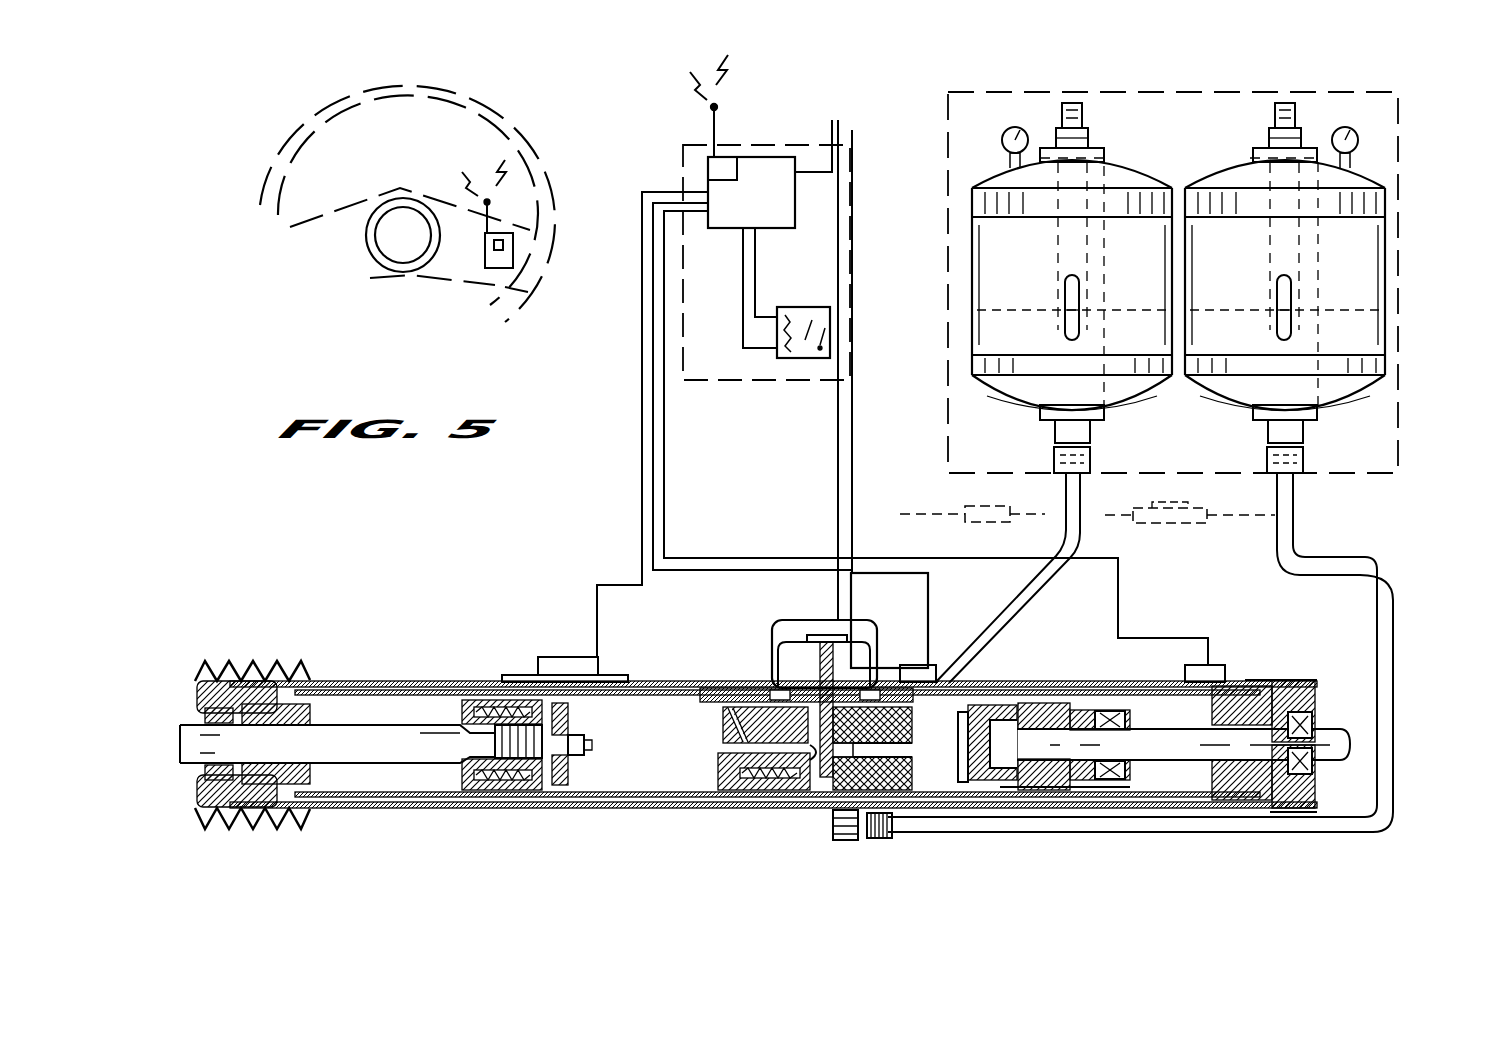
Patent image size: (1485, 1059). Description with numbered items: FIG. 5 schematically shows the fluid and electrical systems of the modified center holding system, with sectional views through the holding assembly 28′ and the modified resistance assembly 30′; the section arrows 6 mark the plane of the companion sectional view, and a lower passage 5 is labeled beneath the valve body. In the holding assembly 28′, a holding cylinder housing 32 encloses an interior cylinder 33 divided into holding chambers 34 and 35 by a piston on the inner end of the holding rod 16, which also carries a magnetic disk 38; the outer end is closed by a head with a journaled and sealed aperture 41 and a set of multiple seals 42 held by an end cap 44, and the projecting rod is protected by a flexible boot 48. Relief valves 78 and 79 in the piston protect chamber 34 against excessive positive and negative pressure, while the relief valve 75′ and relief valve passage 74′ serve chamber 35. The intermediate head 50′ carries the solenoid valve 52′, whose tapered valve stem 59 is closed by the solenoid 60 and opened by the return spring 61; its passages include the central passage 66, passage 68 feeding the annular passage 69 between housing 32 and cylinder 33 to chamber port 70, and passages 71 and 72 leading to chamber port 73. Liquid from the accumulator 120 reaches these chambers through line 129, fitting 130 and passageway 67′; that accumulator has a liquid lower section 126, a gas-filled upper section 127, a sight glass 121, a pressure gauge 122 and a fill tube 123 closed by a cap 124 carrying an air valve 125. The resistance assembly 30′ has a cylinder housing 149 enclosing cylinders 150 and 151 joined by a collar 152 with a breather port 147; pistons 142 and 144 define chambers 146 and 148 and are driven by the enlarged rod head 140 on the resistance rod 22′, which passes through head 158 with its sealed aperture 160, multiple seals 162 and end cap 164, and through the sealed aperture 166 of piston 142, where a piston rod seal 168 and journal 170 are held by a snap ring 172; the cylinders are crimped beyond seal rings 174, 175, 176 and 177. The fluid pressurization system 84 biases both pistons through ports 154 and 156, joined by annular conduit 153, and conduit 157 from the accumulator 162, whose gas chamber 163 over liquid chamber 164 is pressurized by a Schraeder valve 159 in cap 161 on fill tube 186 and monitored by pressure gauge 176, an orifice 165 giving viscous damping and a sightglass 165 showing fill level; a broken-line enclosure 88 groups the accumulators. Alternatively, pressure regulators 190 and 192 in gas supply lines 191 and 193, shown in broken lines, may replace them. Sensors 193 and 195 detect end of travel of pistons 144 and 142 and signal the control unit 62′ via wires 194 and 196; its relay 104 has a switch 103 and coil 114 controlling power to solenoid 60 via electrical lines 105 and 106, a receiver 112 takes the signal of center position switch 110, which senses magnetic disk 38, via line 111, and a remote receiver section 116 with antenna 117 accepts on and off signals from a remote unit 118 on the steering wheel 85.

The fluid passage 5 is at (938, 797).
The section line 6- 6 is at (827, 617).
The holding rod 16 is at (337, 744).
The resistance rod 22′ is at (1390, 800).
The holding assembly 28′ is at (425, 623).
The resistance assembly 30′ is at (1207, 563).
The holding cylinder housing 32 is at (503, 800).
The interior cylinder 33 is at (560, 800).
The holding chamber 34 is at (330, 692).
The holding chamber 35 is at (600, 772).
The magnetic disk 38 is at (606, 697).
The journaled and sealed aperture 41 is at (272, 810).
The multiple seals 42 is at (228, 812).
The end cap 44 is at (213, 660).
The flexible boot 48 is at (257, 660).
The intermediate head 50′ is at (767, 807).
The solenoid valve 52′ is at (838, 452).
The valve stem 59 is at (826, 705).
The solenoid 60 is at (852, 627).
The return spring 61 is at (798, 805).
The control unit 62′ is at (760, 138).
The internal passage 66 is at (803, 807).
The passageway 67′ is at (893, 838).
The internal passage 68 is at (760, 700).
The annular passage 69 is at (645, 690).
The chamber port 70 is at (313, 660).
The internal passage 71 is at (723, 730).
The internal passage 72 is at (760, 700).
The chamber port 73 is at (700, 705).
The relief valve passage 74′ is at (680, 812).
The relief valve 75′ is at (720, 762).
The relief valve 78 is at (520, 700).
The pressure relief valve 79 is at (457, 768).
The fluid pressurization system 84 is at (962, 358).
The steering wheel 85 is at (500, 118).
The reservoir assembly 88 is at (1357, 405).
The switch 103 is at (830, 330).
The relay 104 is at (797, 358).
The electrical line 105 is at (832, 125).
The electrical line 106 is at (852, 130).
The center position switch 110 is at (575, 662).
The electrical line 111 is at (565, 655).
The receiver 112 is at (751, 192).
The coil 114 is at (790, 310).
The remote receiver section 116 is at (718, 170).
The antenna 117 is at (712, 108).
The remote signal generating unit 118 is at (513, 250).
The accumulator 120 is at (1385, 250).
The sight glass 121 is at (1275, 280).
The pressure gauge 122 is at (1362, 152).
The liquid fill tube 123 is at (1272, 110).
The fill cap 124 is at (1348, 128).
The Schraeder type air valve 125 is at (1292, 122).
The lower section 126 is at (1347, 339).
The upper section 127 is at (1354, 240).
The line 129 is at (1417, 619).
The fitting 130 is at (848, 840).
The rod head 140 is at (1043, 700).
The resistance piston 142 is at (1108, 785).
The resistance piston 144 is at (985, 790).
The fluid chamber 146 is at (1190, 660).
The breather port 147 is at (1040, 798).
The fluid chamber 148 is at (1066, 500).
The resistance cylinder housing 149 is at (1217, 817).
The interior cylinder 150 is at (1098, 700).
The interior cylinder 151 is at (1040, 688).
The collar 152 is at (1022, 795).
The annular conduit 153 is at (1018, 688).
The port 154 is at (1212, 672).
The port 156 is at (947, 688).
The conduit 157 is at (1082, 510).
The head 158 is at (1233, 688).
The one-way gas valve 159 is at (1078, 108).
The journaled and sealed aperture 160 is at (1317, 785).
The cap 161 is at (1062, 115).
The accumulator 162 is at (972, 350).
The gas chamber 163 is at (1015, 238).
The liquid chamber 164 is at (1022, 338).
The orifice 165 is at (1043, 456).
The sealed aperture 166 is at (1170, 698).
The piston rod seal 168 is at (1112, 760).
The journal 170 is at (1190, 803).
The snap ring 172 is at (1128, 792).
The seal ring 174 is at (852, 560).
The seal ring 175 is at (1015, 790).
The pressure gauge 176 is at (1012, 127).
The seal ring 177 is at (1243, 683).
The liquid fill tube 186 is at (1088, 140).
The pressure regulator 190 is at (1175, 508).
The gas supply line 191 is at (1170, 506).
The pressure regulator 192 is at (985, 505).
The sensor 193 is at (935, 506).
The wire 194 is at (928, 575).
The sensor 195 is at (1394, 598).
The wire 196 is at (1282, 553).